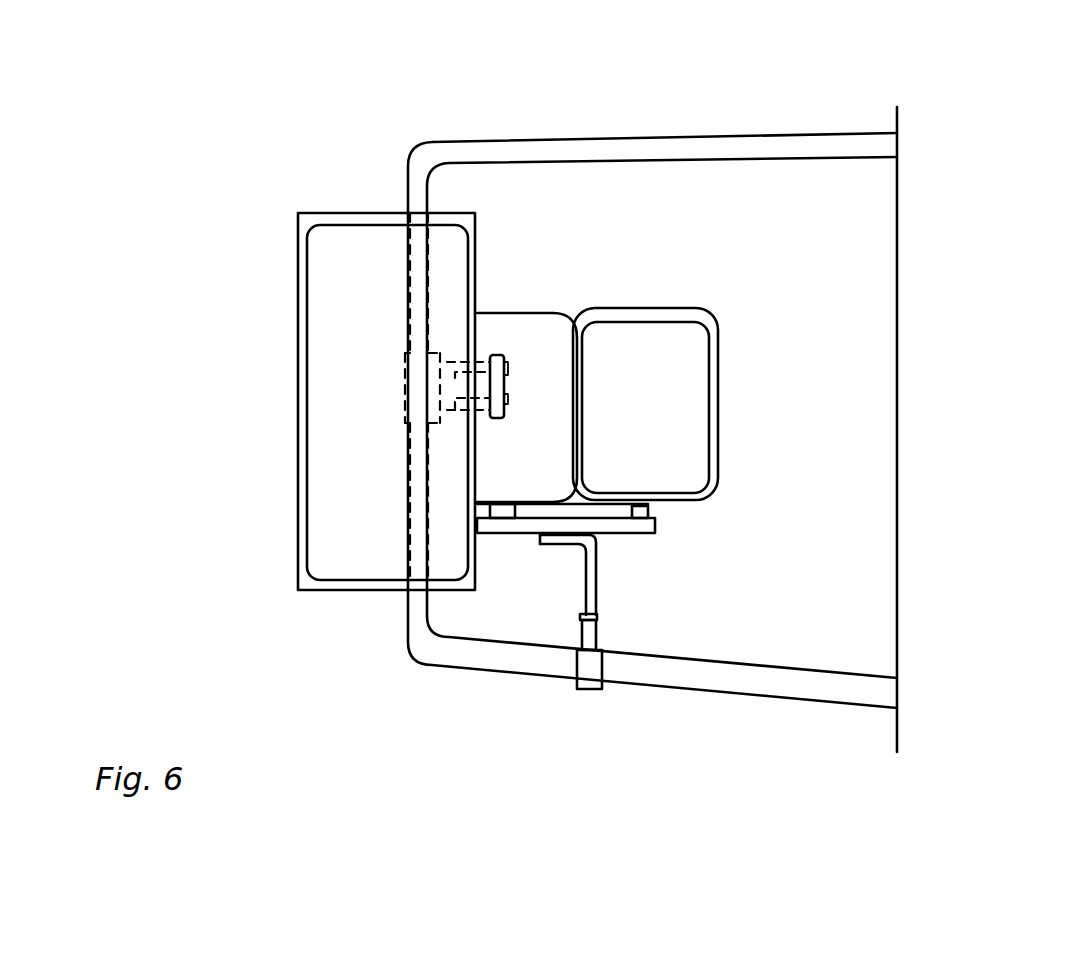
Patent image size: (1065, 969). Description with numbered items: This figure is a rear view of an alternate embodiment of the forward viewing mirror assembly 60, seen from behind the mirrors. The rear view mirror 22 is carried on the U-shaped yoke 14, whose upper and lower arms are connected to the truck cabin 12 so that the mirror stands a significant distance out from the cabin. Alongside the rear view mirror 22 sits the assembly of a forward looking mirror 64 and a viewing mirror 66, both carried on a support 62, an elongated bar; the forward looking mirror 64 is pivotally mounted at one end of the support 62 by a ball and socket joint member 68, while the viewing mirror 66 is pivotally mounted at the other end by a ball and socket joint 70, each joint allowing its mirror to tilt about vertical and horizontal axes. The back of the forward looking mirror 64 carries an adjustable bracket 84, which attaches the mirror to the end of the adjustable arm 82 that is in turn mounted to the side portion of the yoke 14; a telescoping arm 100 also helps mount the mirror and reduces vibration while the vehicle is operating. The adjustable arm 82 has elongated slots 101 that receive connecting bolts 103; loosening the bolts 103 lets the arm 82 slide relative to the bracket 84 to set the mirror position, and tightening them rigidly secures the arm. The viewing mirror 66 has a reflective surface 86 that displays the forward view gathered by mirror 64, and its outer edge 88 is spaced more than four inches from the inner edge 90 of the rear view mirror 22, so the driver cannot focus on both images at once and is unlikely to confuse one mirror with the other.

The truck cabin 12 is at (942, 137).
The yoke 14 is at (423, 155).
The rear view mirror 22 is at (300, 358).
The mirror assembly 60 is at (870, 482).
The support 62 is at (568, 525).
The forward looking mirror 64 is at (553, 328).
The viewing mirror 66 is at (700, 318).
The ball and socket joint member 68 is at (502, 512).
The ball and socket joint 70 is at (645, 508).
The adjustable arm 82 is at (483, 362).
The adjustable bracket 84 is at (500, 352).
The reflective surface 86 is at (692, 357).
The outer edge 88 is at (587, 433).
The inner edge 90 is at (465, 447).
The telescoping arm 100 is at (598, 605).
The elongated slots 101 is at (462, 402).
The connecting bolts 103 is at (503, 407).